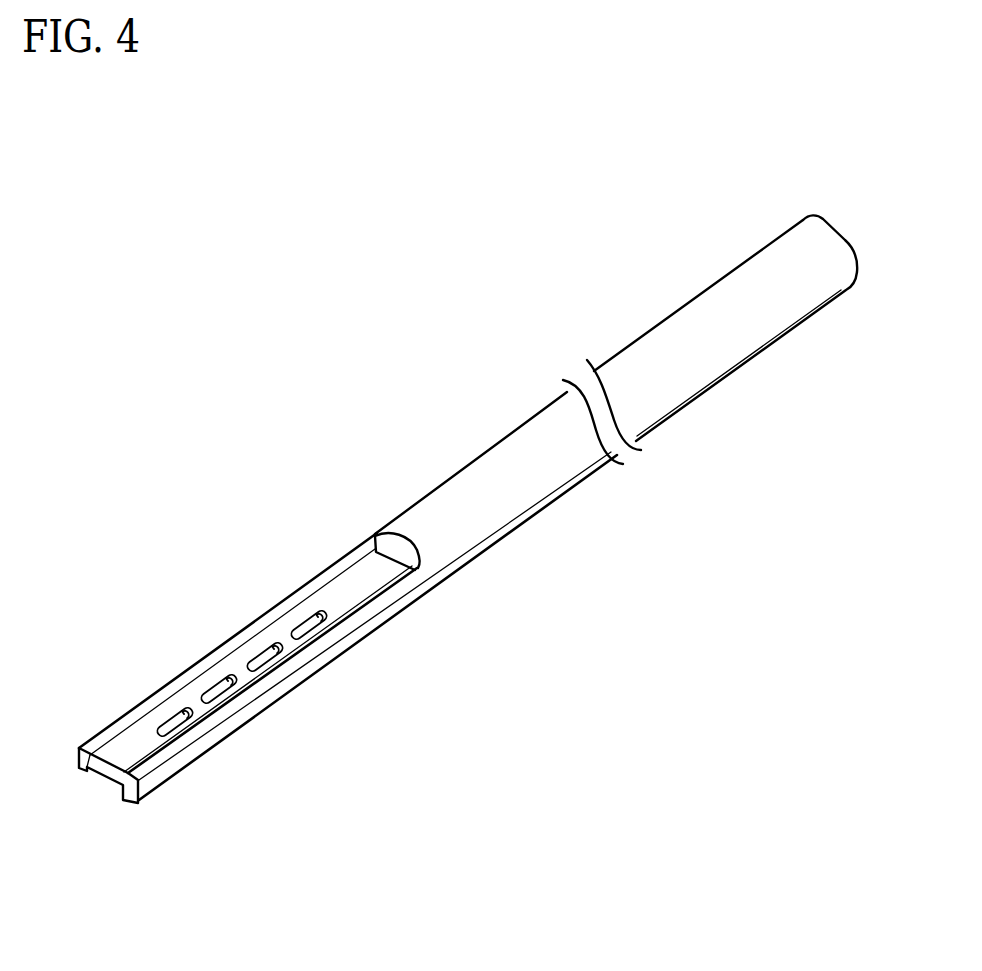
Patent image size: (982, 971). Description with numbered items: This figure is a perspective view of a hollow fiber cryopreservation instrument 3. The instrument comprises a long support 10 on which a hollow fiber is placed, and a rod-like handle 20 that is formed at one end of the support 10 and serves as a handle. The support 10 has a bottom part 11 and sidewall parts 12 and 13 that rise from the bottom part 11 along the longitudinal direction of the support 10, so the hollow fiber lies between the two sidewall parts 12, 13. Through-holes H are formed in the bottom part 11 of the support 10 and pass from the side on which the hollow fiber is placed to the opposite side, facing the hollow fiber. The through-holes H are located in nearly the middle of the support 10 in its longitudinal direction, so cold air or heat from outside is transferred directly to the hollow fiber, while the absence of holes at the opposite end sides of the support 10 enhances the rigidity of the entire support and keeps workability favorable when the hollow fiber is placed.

The hollow fiber cryopreservation instrument 3 is at (268, 364).
The support 10 is at (371, 744).
The bottom part 11 is at (338, 600).
The sidewall part 12 is at (357, 560).
The sidewall part 13 is at (413, 573).
The handle 20 is at (542, 472).
The through-holes H is at (307, 618).